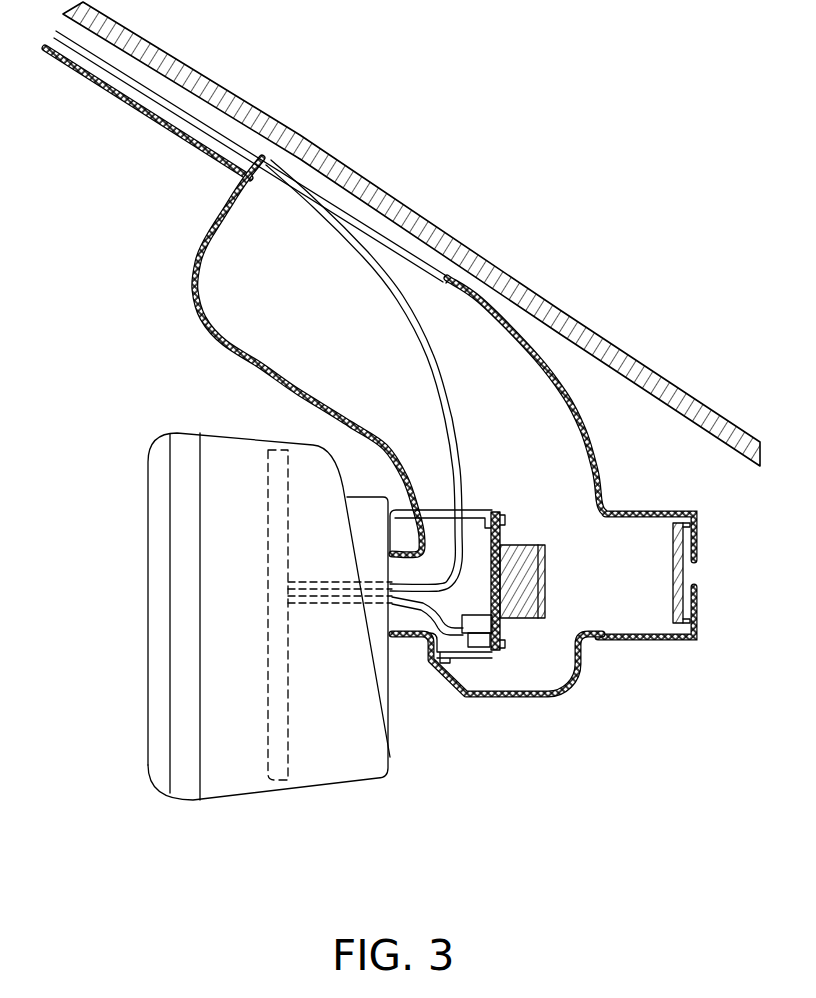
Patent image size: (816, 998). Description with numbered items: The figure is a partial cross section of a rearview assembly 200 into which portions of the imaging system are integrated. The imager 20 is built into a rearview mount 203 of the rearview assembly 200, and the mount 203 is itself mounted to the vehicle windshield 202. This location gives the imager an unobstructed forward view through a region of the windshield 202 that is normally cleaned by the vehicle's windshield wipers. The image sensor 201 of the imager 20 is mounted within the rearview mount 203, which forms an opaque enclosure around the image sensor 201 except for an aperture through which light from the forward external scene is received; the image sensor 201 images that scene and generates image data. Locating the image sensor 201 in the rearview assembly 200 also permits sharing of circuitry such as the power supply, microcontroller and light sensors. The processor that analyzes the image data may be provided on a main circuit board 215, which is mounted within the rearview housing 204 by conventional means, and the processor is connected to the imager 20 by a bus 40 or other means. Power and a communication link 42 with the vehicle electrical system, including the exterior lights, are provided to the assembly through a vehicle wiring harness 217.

The windshield 202 is at (486, 238).
The rearview mount 203 is at (233, 255).
The communication link 42 is at (445, 446).
The vehicle wiring harness 217 is at (428, 386).
The imager 20 is at (539, 634).
The bus 40 is at (412, 637).
The image sensor 201 is at (488, 580).
The rearview assembly 200 is at (191, 811).
The rearview housing 204 is at (146, 692).
The main circuit board 215 is at (290, 722).